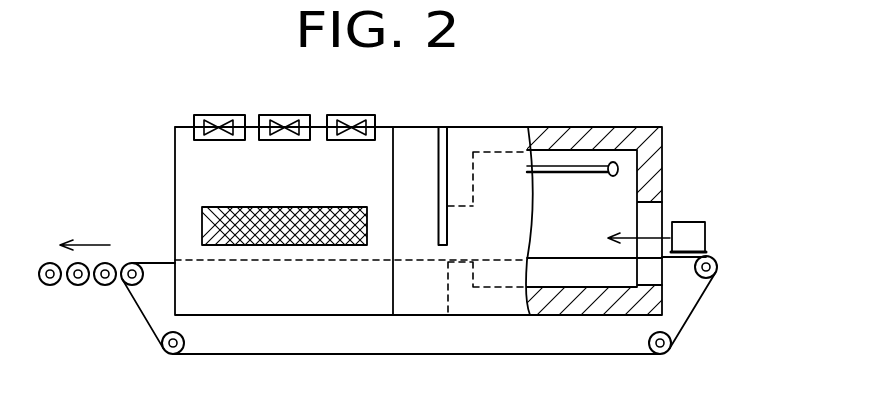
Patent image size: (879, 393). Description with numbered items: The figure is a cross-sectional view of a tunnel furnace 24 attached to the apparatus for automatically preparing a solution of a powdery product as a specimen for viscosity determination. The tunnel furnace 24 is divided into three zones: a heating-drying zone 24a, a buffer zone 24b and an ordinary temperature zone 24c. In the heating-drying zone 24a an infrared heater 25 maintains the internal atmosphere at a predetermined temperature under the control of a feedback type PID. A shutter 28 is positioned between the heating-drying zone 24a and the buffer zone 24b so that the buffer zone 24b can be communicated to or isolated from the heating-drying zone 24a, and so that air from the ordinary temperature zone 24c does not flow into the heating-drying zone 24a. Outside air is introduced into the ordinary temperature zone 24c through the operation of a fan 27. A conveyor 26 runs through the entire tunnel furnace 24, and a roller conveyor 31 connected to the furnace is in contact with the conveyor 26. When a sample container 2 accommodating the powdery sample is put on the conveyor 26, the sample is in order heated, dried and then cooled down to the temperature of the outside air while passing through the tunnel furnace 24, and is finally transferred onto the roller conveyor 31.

The sample container 2 is at (697, 238).
The tunnel furnace 24 is at (593, 61).
The heating-drying zone 24a is at (613, 187).
The buffer zone 24b is at (415, 148).
The ordinary temperature zone 24c is at (205, 166).
The infrared heater 25 is at (590, 167).
The conveyor 26 is at (158, 261).
The fan 27 is at (280, 115).
The shutter 28 is at (448, 153).
The roller conveyor 31 is at (80, 285).